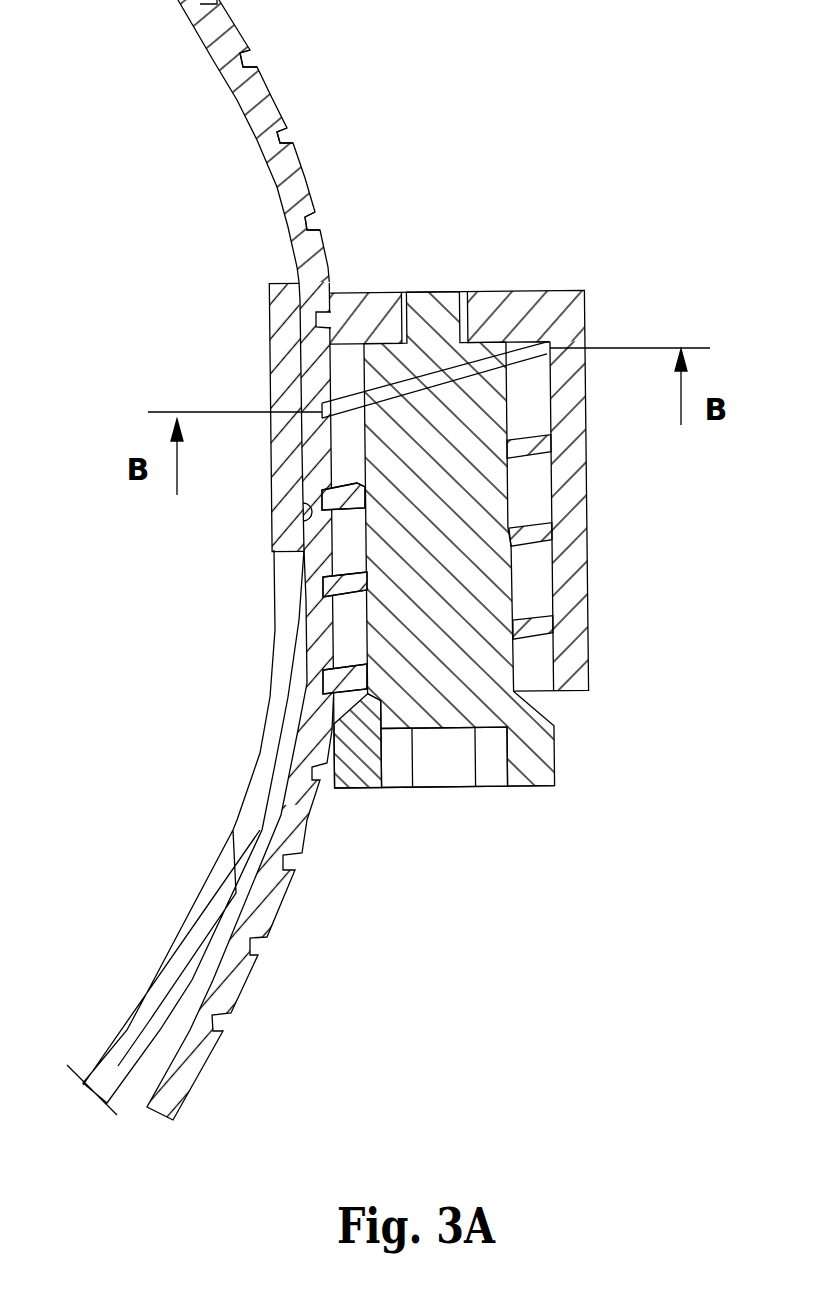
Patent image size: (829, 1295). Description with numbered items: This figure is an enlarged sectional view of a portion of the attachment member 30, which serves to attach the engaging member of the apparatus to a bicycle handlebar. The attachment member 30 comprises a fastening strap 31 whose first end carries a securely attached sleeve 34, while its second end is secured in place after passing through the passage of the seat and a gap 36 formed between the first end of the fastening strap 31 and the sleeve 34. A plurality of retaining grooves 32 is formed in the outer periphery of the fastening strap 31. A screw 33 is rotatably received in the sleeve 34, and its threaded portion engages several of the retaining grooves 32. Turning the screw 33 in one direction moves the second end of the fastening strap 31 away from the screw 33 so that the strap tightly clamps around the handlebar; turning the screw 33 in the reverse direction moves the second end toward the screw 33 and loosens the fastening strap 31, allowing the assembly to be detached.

The attachment member 30 is at (231, 560).
The fastening strap 31 is at (250, 98).
The retaining grooves 32 is at (282, 135).
The screw 33 is at (525, 764).
The sleeve 34 is at (481, 612).
The gap 36 is at (320, 492).